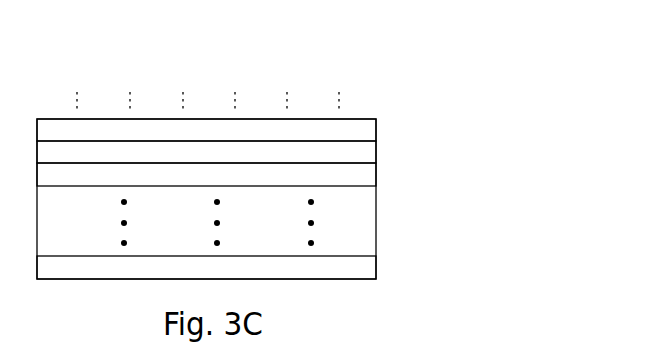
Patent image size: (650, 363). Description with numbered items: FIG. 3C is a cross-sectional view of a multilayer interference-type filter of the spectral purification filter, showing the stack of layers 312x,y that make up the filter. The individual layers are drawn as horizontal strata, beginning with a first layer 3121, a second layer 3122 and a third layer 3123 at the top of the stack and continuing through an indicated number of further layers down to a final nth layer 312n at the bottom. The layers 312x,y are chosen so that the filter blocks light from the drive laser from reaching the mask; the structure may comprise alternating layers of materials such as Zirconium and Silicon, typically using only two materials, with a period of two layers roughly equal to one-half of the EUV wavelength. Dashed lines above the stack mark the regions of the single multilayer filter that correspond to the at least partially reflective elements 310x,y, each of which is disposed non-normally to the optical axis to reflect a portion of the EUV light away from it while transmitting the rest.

The layers of the multilayer structure 312x,y is at (422, 63).
The first layer of the multilayer structure 3121 is at (376, 130).
The second layer of the multilayer structure 3122 is at (376, 155).
The third layer of the multilayer structure 3123 is at (376, 178).
The nth layer of the multilayer structure 312n is at (376, 268).
The at least partially reflective element 310x,y is at (108, 84).